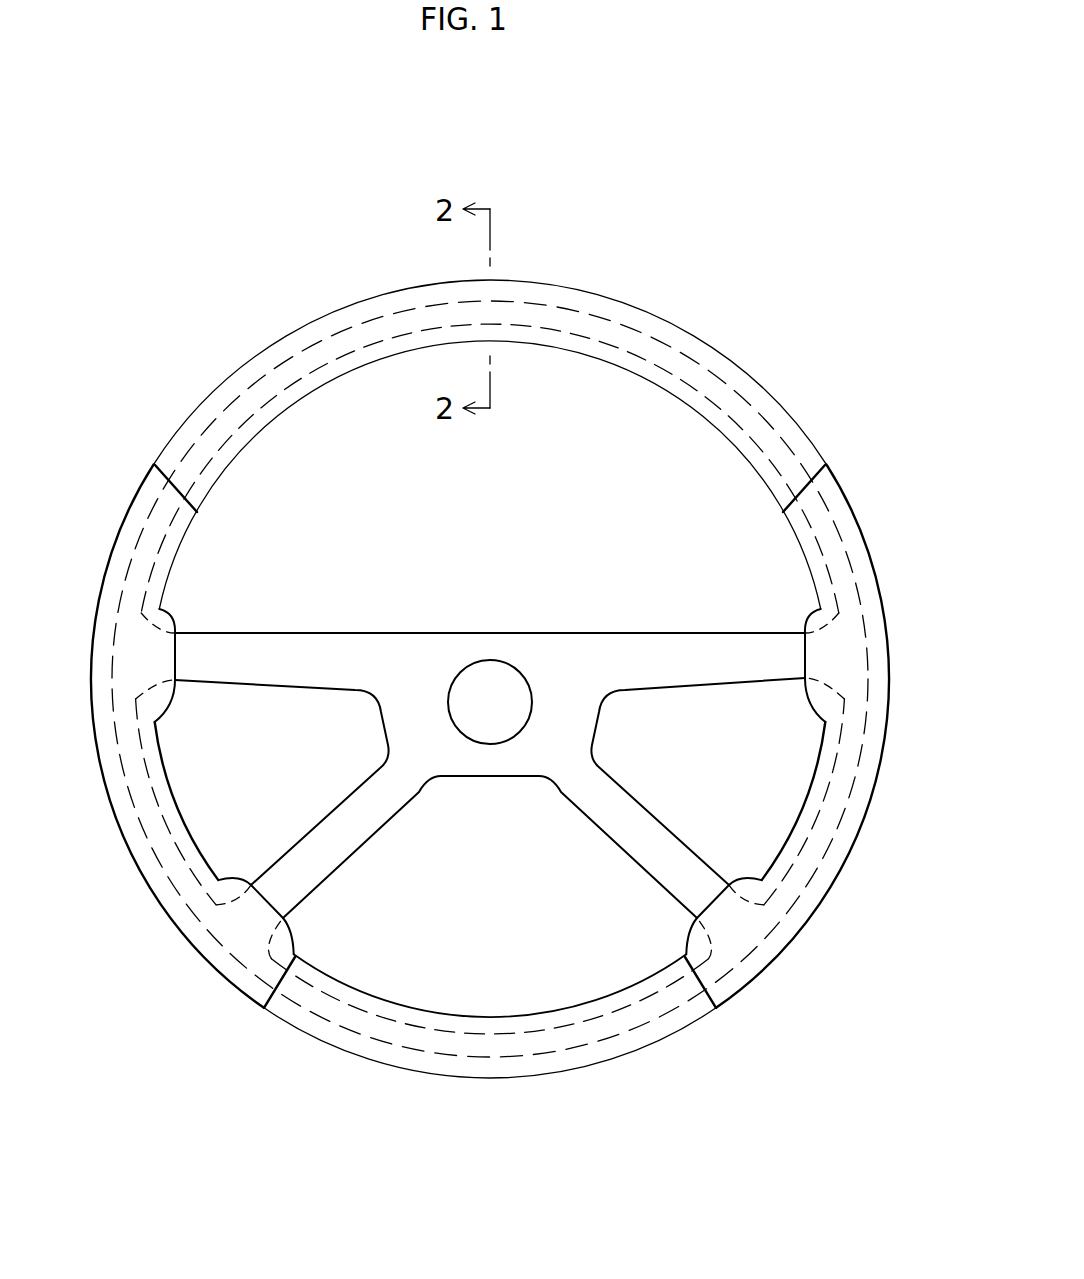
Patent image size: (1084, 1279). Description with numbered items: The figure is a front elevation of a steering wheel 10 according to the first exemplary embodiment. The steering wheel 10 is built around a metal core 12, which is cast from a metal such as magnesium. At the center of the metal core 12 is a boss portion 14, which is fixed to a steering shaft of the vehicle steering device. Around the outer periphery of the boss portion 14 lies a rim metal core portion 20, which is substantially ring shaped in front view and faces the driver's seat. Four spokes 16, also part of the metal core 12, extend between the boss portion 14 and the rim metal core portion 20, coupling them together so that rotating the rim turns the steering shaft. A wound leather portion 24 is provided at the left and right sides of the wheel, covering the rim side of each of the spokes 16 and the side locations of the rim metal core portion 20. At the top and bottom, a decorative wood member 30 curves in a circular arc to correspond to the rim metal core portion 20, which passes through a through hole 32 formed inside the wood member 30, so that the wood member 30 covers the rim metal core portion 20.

The steering wheel 10 is at (672, 155).
The metal core 12 is at (662, 338).
The boss portion 14 is at (552, 652).
The spokes 16 is at (280, 650).
The rim metal core portion 20 is at (713, 371).
The wound leather portion 24 is at (136, 857).
The wood member 30 is at (560, 283).
The through hole 32 is at (599, 328).